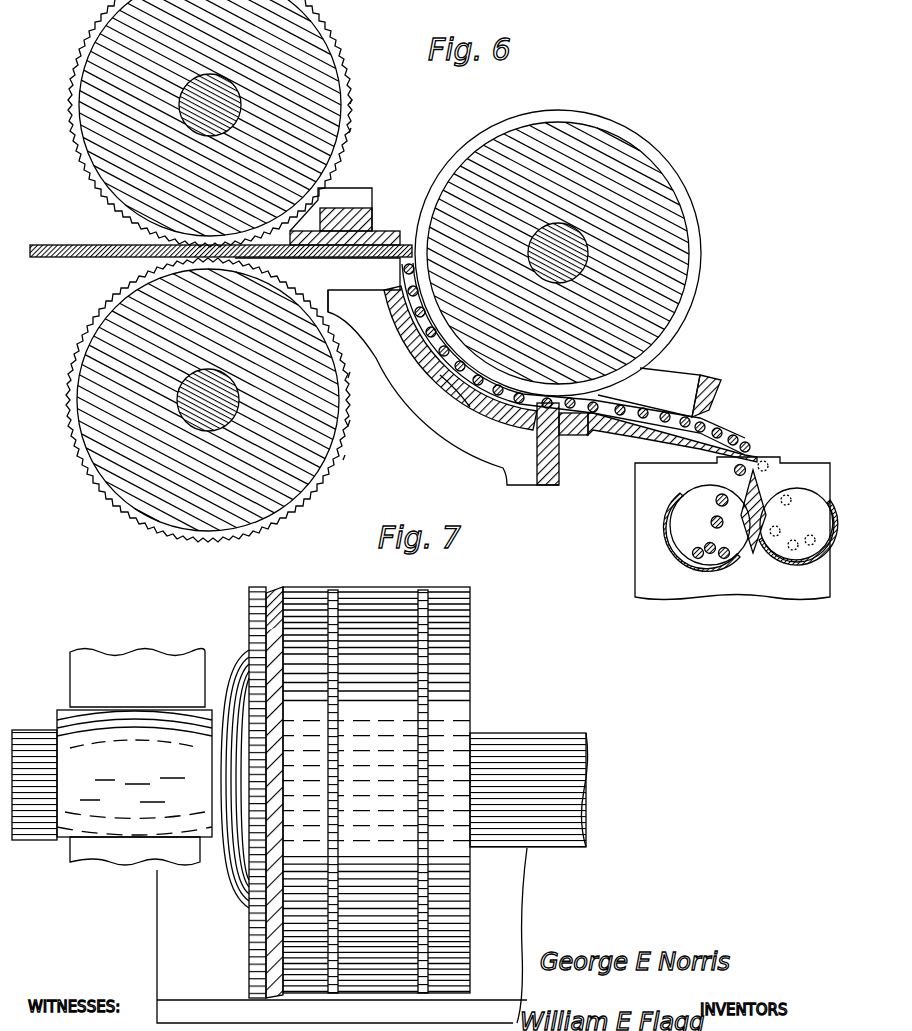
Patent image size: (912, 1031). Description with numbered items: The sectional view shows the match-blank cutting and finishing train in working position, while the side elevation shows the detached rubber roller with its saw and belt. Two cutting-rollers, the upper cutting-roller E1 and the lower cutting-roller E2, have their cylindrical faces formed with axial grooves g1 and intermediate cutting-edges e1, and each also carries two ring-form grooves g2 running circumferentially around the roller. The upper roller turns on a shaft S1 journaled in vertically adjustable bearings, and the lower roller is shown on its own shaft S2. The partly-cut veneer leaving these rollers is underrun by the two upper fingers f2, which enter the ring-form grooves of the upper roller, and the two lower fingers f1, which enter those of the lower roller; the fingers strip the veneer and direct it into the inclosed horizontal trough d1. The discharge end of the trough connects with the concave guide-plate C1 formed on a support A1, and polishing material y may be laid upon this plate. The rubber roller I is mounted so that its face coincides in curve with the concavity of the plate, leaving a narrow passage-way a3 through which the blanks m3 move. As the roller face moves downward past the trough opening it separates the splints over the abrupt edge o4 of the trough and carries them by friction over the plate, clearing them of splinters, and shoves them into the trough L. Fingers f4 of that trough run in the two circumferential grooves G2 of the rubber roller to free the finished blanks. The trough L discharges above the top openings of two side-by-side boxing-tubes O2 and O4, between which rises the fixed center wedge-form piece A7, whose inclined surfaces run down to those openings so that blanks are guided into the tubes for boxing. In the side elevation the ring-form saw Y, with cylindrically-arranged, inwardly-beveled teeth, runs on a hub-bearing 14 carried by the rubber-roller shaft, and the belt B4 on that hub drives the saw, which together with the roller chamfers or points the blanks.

In FIG. 6, the upper cutting-roller E1 is at (210, 123).
In FIG. 6, the cutting-roller shaft S1 is at (210, 105).
In FIG. 6, the grooves g1 is at (355, 96).
In FIG. 6, the cutting-edges e1 is at (353, 132).
In FIG. 6, the lower cutting-roller E2 is at (208, 400).
In FIG. 6, the lower roll shaft S2 is at (208, 400).
In FIG. 6, the ring-form grooves g2 is at (349, 378).
In FIG. 6, the horizontal trough d1 is at (410, 232).
In FIG. 6, the lower fingers f1 is at (360, 188).
In FIG. 6, the upper fingers f2 is at (285, 262).
In FIG. 6, the rubber roller I is at (558, 253).
In FIG. 6, the circumferential grooves G2 is at (701, 278).
In FIG. 7, the circumferential grooves G2 is at (418, 790).
In FIG. 6, the abrupt edge o4 is at (414, 270).
In FIG. 6, the passage-way a3 is at (505, 410).
In FIG. 6, the polishing material y is at (448, 370).
In FIG. 6, the concave guide-plate C1 is at (497, 392).
In FIG. 7, the concave guide-plate C1 is at (342, 935).
In FIG. 6, the support A1 is at (546, 444).
In FIG. 6, the blanks m3 is at (616, 409).
In FIG. 6, the fingers of trough L f4 is at (649, 392).
In FIG. 6, the trough L is at (714, 395).
In FIG. 6, the center wedge-form piece A7 is at (760, 480).
In FIG. 6, the inner boxing-tube O2 is at (706, 528).
In FIG. 6, the outer boxing-tube O4 is at (827, 505).
In FIG. 7, the ring-form saw Y is at (255, 783).
In FIG. 7, the hub-bearing 14 is at (150, 765).
In FIG. 7, the belt B4 is at (137, 761).